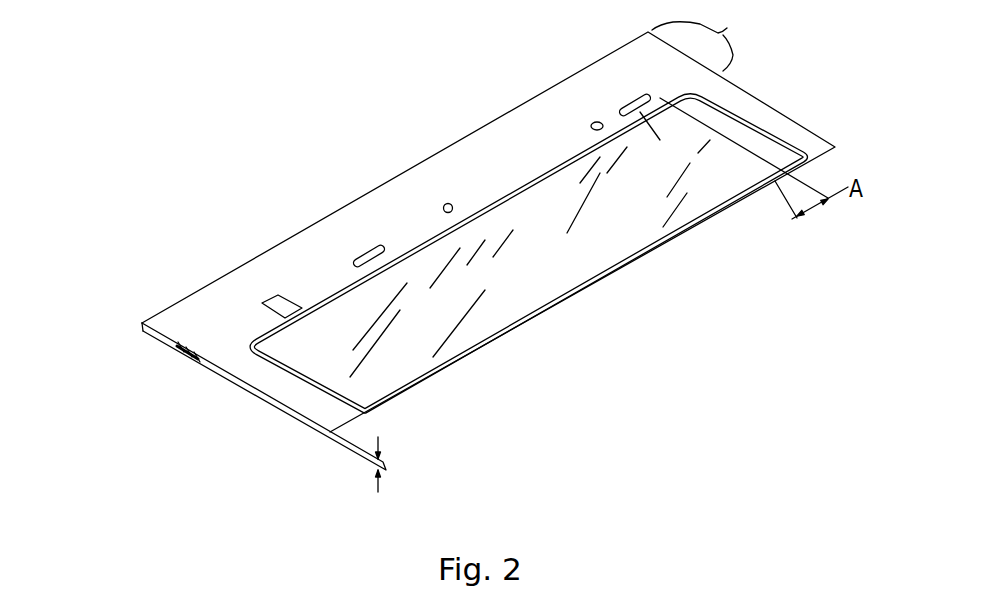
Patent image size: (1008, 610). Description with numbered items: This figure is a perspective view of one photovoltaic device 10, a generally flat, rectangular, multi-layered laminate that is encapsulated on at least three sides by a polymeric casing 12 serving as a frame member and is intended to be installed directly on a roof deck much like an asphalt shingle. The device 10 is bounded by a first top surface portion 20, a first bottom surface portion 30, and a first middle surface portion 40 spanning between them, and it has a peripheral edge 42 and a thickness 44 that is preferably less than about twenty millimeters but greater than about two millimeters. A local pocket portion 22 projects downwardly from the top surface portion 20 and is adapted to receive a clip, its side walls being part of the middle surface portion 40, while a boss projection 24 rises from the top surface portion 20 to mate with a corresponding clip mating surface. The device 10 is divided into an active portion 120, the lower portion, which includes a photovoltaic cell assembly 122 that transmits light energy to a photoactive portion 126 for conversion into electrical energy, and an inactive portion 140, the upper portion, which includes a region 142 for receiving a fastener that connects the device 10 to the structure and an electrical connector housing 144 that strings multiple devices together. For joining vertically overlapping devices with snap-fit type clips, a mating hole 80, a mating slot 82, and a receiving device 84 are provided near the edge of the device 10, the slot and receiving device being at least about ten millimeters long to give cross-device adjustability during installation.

The photovoltaic device 10 is at (438, 69).
The polymeric casing 12 is at (293, 263).
The first top surface portion 20 is at (646, 90).
The local pocket portion 22 is at (268, 297).
The boss projection 24 is at (446, 205).
The first bottom surface portion 30 is at (97, 382).
The first middle surface portion 40 is at (308, 425).
The peripheral edge 42 is at (141, 326).
The thickness 44 is at (378, 477).
The mating hole 80 is at (592, 124).
The mating slot 82 is at (632, 102).
The receiving device 84 is at (357, 252).
The active portion 120 is at (723, 71).
The photovoltaic cell assembly 122 is at (530, 258).
The photoactive portion 126 is at (530, 258).
The inactive portion 140 is at (711, 42).
The region for receiving a fastener 142 is at (510, 150).
The electrical connector housing 144 is at (185, 357).